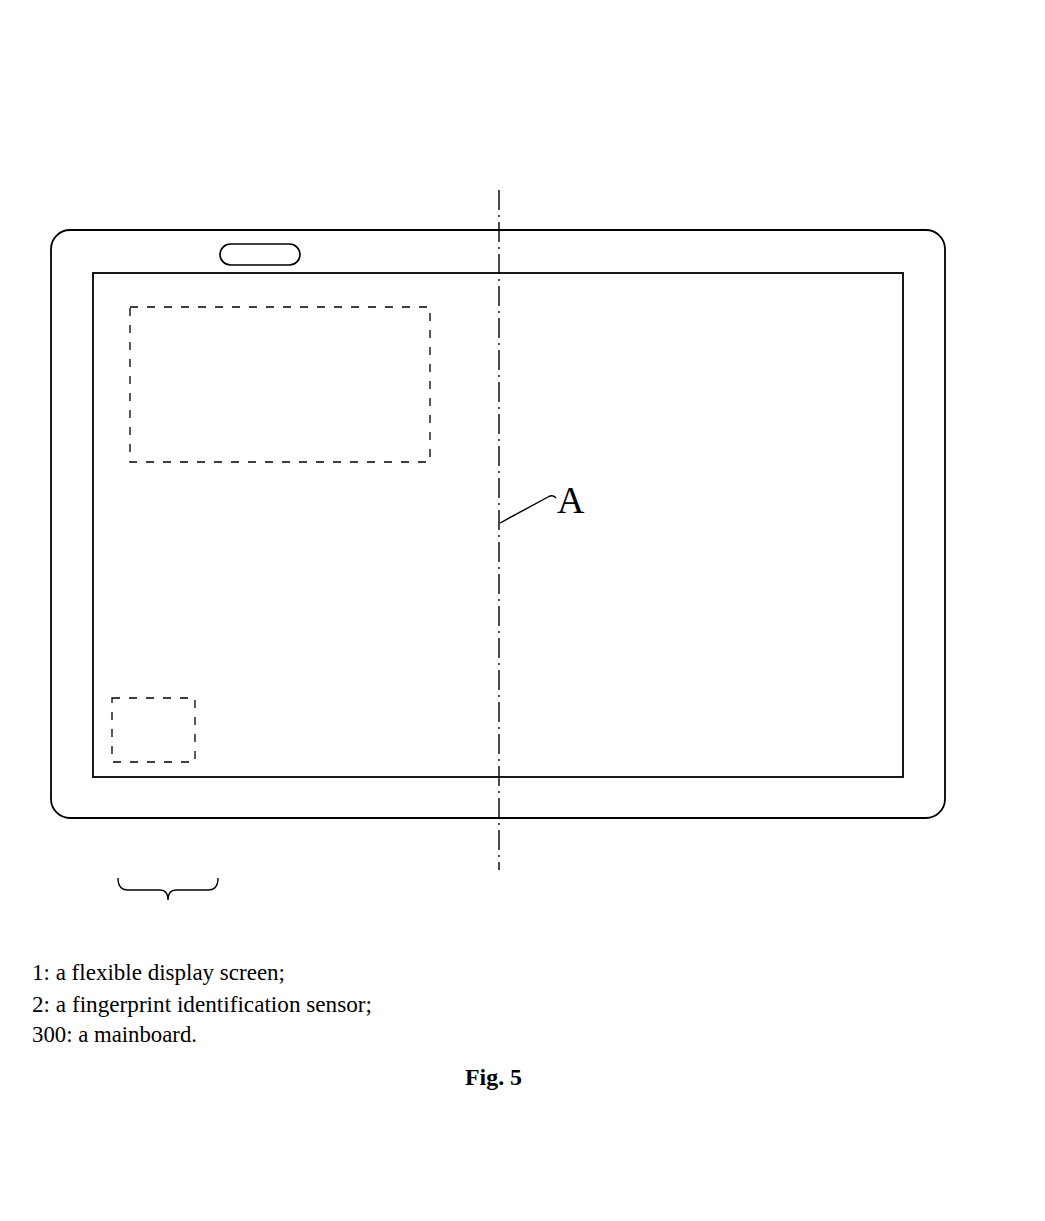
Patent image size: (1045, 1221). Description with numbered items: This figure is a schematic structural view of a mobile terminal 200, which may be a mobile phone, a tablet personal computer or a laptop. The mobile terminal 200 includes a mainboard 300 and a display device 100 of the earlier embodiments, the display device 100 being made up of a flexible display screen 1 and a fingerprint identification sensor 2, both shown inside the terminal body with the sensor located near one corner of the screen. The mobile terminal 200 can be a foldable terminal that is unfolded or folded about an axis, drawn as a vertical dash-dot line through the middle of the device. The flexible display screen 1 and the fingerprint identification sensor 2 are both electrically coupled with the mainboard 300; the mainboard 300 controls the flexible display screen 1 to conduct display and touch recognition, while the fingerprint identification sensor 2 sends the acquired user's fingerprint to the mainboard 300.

The flexible display screen 1 is at (245, 750).
The fingerprint identification sensor 2 is at (162, 738).
The display device 100 is at (168, 911).
The mobile terminal 200 is at (515, 127).
The mainboard 300 is at (163, 306).